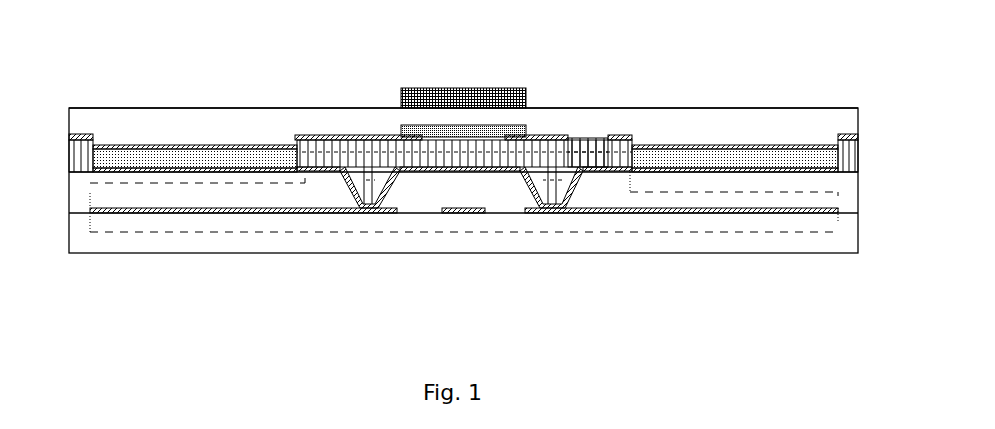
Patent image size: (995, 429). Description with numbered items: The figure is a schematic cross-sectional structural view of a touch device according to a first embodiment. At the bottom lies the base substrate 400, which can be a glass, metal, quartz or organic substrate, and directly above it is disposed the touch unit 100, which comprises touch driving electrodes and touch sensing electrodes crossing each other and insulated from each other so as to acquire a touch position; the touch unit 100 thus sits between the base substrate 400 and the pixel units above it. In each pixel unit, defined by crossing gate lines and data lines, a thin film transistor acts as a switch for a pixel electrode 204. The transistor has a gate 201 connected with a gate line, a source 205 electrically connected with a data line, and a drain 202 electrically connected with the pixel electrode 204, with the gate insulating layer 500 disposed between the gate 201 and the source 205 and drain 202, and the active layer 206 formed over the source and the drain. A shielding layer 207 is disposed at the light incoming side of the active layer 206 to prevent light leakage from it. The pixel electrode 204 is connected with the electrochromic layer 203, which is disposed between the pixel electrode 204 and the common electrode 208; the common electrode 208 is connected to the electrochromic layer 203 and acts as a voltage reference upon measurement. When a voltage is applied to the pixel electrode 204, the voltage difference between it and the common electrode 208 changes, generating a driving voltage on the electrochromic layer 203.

The touch unit 100 is at (428, 238).
The gate 201 is at (527, 87).
The drain 202 is at (337, 137).
The electrochromic layer 203 is at (198, 162).
The pixel electrode 204 is at (167, 147).
The source 205 is at (548, 137).
The active layer 206 is at (400, 108).
The shielding layer 207 is at (592, 143).
The common electrode 208 is at (110, 172).
The base substrate 400 is at (170, 253).
The gate insulating layer 500 is at (732, 123).